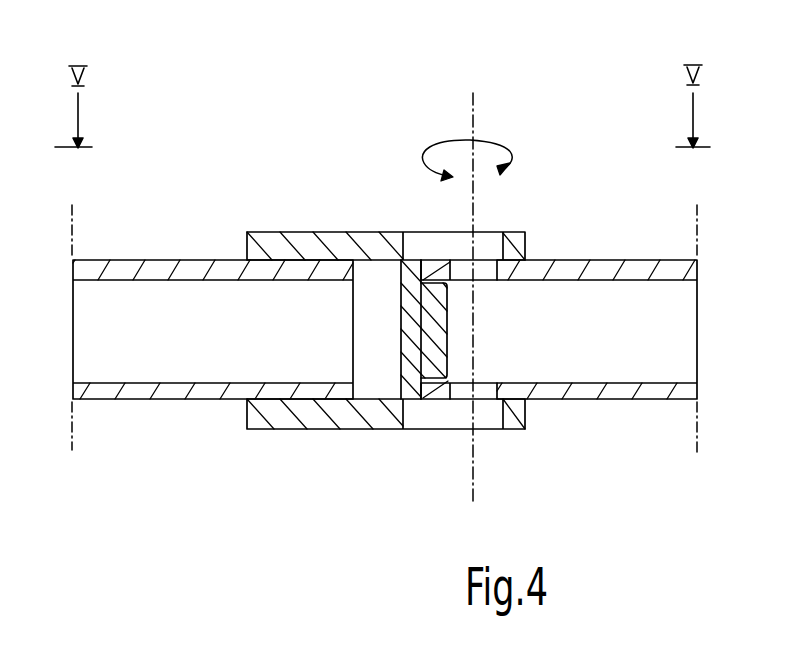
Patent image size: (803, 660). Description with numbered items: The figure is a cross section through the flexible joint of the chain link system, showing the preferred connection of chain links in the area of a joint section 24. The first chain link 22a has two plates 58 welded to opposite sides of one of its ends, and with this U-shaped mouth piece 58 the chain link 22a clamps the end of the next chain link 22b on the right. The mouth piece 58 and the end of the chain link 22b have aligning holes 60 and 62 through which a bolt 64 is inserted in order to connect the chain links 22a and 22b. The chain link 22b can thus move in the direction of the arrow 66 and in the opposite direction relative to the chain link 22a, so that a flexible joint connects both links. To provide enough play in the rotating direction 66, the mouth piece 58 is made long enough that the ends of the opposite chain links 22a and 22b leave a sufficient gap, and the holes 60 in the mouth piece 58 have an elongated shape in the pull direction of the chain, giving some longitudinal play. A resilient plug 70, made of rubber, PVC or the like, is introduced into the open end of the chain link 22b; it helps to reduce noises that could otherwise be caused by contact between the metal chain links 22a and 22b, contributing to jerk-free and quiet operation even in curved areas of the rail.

The joint section 24 is at (255, 92).
The first chain link 22a is at (135, 400).
The next chain link 22b is at (648, 400).
The plates (mouth piece) 58 is at (288, 233).
The holes in the mouth piece 60 is at (428, 418).
The hole in chain link end 62 is at (483, 388).
The bolt 64 is at (475, 103).
The arrow (rotating direction) 66 is at (515, 158).
The resilient plug 70 is at (400, 362).